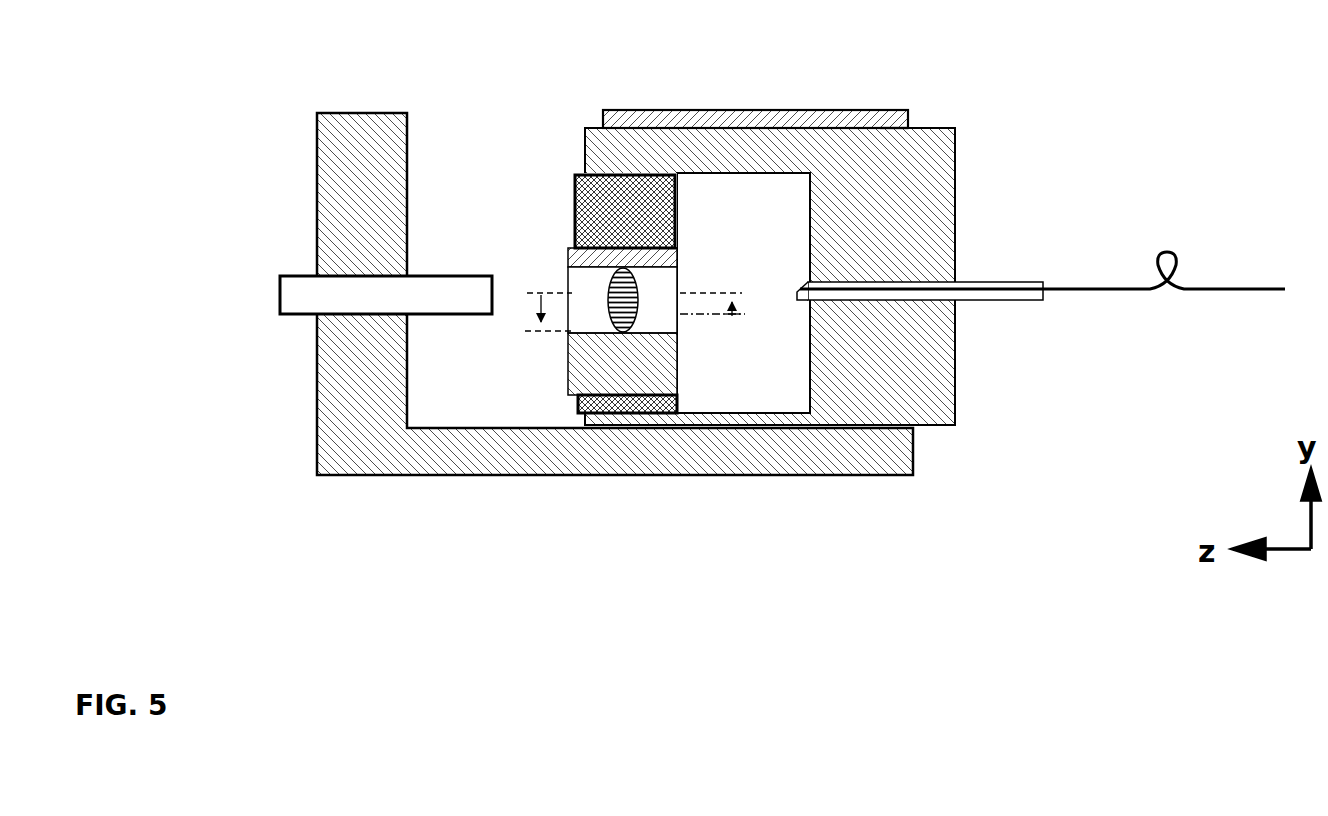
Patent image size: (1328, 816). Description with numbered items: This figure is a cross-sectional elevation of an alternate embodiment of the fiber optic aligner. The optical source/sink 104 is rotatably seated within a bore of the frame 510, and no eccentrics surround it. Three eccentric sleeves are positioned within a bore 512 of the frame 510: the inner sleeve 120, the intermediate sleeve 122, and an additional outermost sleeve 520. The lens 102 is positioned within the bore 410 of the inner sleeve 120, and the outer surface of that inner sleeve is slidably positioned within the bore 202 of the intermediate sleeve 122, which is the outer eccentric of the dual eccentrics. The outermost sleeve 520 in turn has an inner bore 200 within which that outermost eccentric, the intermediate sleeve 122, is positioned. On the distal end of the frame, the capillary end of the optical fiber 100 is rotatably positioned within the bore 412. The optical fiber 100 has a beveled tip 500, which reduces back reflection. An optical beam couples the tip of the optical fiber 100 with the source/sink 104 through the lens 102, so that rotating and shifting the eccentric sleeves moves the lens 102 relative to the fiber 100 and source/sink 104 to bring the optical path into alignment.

The optical fiber 100 is at (1192, 285).
The lens 102 is at (632, 312).
The optical source/sink 104 is at (298, 290).
The inner sleeve 120 is at (568, 252).
The intermediate sleeve 122 is at (574, 213).
The inner bore 200 is at (756, 180).
The bore 202 is at (671, 258).
The bore 410 is at (664, 273).
The bore 412 is at (960, 285).
The beveled tip 500 is at (800, 282).
The frame 510 is at (334, 160).
The bore 512 is at (912, 129).
The outermost sleeve 520 is at (925, 178).